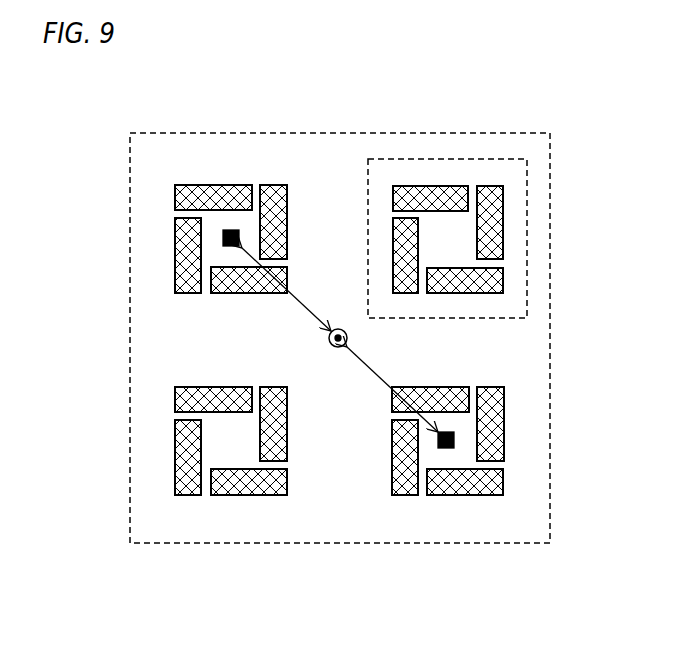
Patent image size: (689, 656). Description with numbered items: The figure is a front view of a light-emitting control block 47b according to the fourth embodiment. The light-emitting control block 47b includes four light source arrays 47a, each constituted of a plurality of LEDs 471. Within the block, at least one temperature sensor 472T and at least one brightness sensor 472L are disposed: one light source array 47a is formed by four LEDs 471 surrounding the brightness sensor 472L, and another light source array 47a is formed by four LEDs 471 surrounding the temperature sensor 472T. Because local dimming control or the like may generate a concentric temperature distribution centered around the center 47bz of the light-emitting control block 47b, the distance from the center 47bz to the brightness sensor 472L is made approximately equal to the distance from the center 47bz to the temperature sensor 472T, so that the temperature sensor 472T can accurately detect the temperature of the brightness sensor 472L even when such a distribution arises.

The LED 471 is at (437, 185).
The light source array 47a is at (517, 158).
The temperature sensor 472T is at (228, 228).
The brightness sensor 472L is at (447, 449).
The center of the light-emitting control block 47bz is at (329, 341).
The light-emitting control block 47b is at (160, 543).